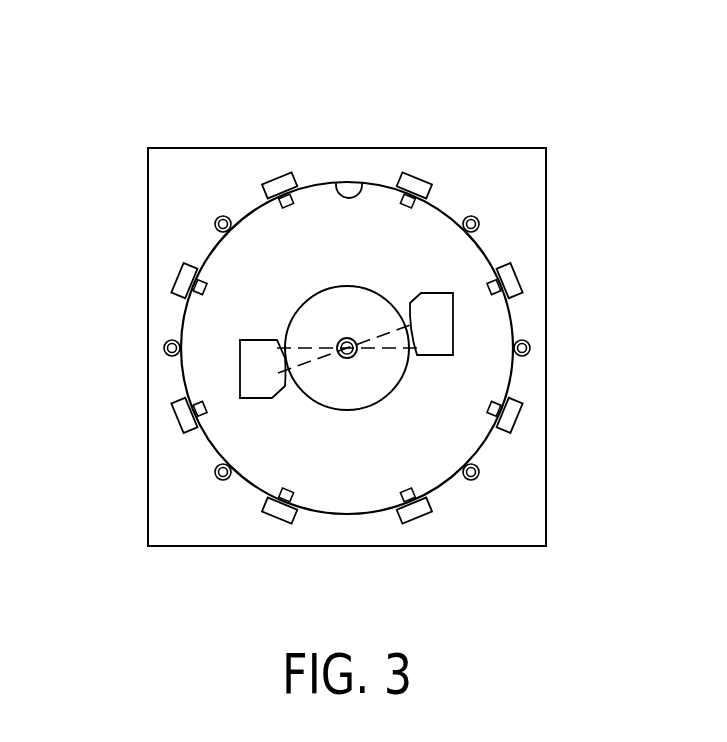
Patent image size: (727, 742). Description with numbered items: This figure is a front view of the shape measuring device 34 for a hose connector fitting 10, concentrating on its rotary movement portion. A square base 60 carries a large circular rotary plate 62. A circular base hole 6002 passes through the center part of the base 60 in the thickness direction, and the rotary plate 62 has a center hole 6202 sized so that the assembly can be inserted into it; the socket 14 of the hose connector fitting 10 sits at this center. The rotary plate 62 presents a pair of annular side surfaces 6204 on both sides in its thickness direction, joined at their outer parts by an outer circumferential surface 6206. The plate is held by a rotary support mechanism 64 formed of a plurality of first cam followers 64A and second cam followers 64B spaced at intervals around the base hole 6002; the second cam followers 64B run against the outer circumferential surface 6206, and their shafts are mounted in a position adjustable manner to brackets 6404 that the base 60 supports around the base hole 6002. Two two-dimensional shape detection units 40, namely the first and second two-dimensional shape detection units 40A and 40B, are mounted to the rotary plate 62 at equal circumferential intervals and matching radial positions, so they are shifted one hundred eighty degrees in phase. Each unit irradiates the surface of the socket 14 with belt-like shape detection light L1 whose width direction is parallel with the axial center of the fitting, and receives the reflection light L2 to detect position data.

The base 60 is at (187, 147).
The rotary plate 62 is at (343, 316).
The base hole 6002 is at (337, 183).
The hole 6202 is at (406, 437).
The annular side surfaces 6204 is at (343, 248).
The outer circumferential surface 6206 is at (485, 250).
The rotary support mechanism 64 is at (284, 296).
The first cam followers 64A is at (216, 218).
The second cam followers 64B is at (290, 193).
The brackets 6404 is at (263, 178).
The two-dimensional shape detection units 40 is at (343, 346).
The first two-dimensional shape detection unit 40A is at (240, 367).
The second two-dimensional shape detection unit 40B is at (455, 322).
The socket 14 is at (325, 463).
The hose connector fitting 10 is at (348, 358).
The shape measuring device 34 is at (463, 85).
The shape detection light L1 is at (307, 343).
The reflection light L2 is at (381, 318).